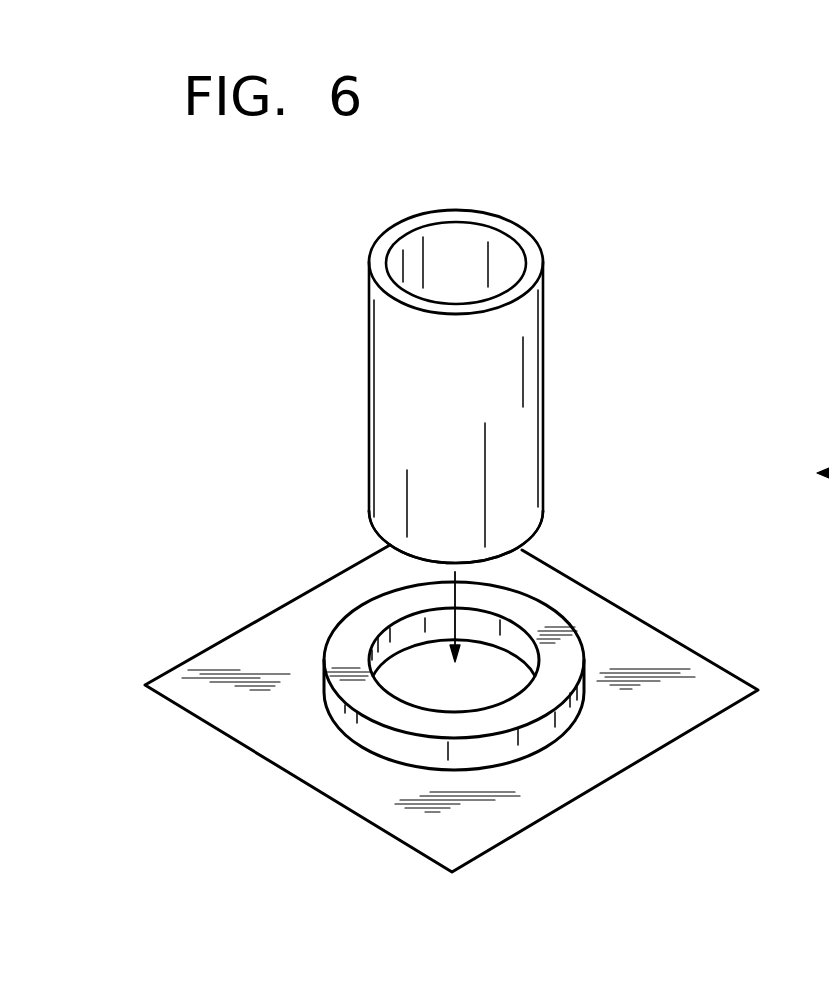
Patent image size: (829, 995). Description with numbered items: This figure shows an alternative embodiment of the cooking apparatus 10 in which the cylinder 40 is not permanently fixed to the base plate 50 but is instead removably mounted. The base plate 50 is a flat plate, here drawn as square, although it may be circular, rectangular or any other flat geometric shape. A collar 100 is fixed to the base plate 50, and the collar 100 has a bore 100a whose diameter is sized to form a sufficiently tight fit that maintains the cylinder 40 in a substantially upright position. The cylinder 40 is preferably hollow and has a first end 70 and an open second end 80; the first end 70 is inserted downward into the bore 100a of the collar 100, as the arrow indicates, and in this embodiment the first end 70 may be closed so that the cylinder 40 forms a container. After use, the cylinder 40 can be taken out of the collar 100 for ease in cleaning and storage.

The cooking apparatus 10 is at (650, 435).
The cylinder 40 is at (526, 363).
The base plate 50 is at (727, 683).
The first end 70 is at (525, 527).
The second end 80 is at (527, 230).
The collar 100 is at (372, 730).
The bore 100a is at (400, 632).